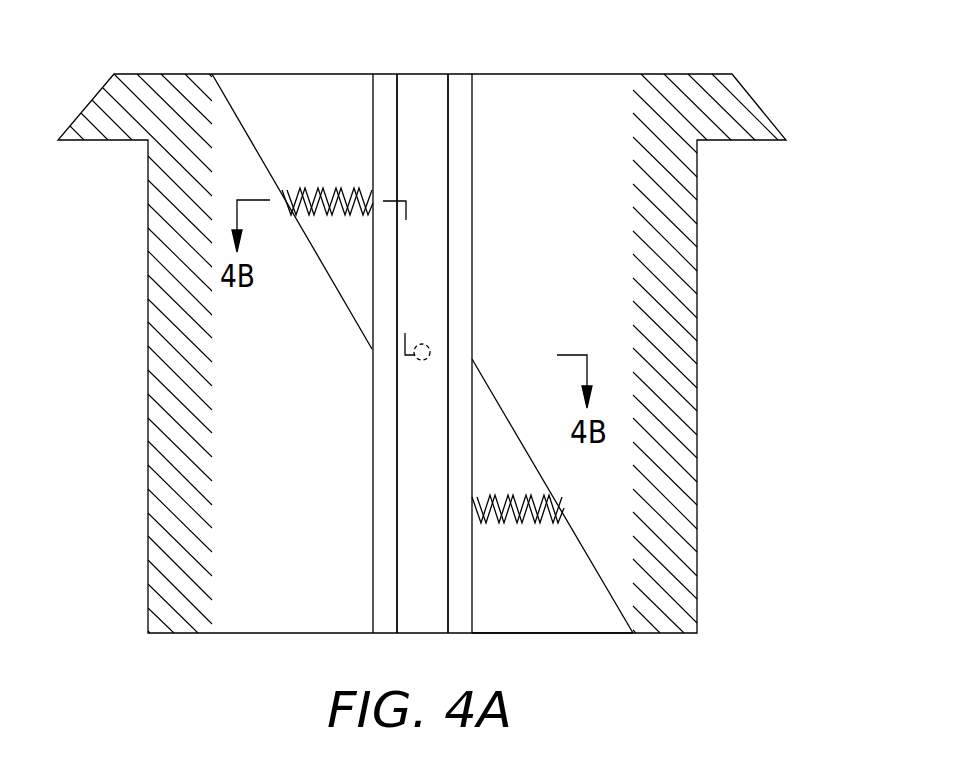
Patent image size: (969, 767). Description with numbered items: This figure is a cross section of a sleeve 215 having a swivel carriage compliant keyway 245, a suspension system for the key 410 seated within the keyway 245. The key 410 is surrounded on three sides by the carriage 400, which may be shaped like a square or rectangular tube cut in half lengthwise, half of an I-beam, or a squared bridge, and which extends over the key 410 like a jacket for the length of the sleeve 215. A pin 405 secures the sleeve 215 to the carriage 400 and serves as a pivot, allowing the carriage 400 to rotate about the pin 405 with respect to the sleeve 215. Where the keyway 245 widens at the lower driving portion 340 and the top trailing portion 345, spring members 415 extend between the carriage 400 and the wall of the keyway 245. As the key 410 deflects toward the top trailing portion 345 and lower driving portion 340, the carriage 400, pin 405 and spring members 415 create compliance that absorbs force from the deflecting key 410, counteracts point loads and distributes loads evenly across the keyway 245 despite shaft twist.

The sleeve 215 is at (690, 95).
The keyway 245 is at (568, 620).
The lower driving portion 340 is at (593, 563).
The top trailing portion 345 is at (262, 166).
The carriage 400 is at (457, 142).
The pin 405 is at (430, 349).
The key 410 is at (440, 275).
The spring members 415 is at (318, 187).